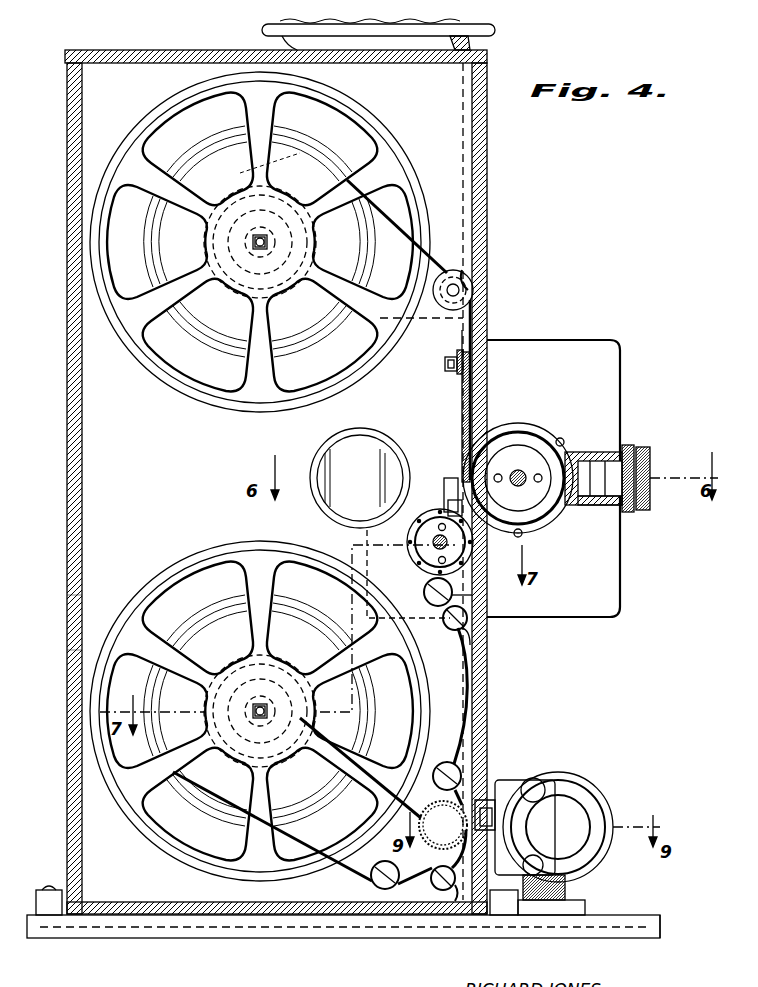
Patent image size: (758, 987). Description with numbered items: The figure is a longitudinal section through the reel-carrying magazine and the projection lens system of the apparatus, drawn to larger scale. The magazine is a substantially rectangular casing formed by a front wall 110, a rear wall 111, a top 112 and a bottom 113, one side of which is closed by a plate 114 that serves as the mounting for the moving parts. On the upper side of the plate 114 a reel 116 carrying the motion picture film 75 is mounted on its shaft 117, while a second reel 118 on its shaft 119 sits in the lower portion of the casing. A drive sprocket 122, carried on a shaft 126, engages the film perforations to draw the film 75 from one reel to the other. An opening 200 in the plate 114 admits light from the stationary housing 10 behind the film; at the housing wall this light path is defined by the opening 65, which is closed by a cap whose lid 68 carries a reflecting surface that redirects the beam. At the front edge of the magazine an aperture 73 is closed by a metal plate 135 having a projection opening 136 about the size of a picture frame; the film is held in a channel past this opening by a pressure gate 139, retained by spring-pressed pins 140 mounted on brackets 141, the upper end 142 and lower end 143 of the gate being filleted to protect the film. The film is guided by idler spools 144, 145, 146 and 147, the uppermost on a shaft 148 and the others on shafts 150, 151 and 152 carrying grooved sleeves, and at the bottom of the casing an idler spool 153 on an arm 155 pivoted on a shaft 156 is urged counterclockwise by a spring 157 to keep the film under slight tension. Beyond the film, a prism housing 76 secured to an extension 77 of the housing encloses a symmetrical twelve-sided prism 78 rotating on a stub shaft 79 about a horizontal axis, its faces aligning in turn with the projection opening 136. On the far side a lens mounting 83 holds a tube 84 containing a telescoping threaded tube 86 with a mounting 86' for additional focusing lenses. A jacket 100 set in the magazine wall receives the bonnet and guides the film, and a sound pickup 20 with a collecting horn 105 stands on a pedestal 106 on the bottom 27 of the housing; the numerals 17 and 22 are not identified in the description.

The stationary housing 10 is at (58, 596).
The lower reel support 17 is at (195, 800).
The sound pickup 20 is at (595, 775).
The cabinet wall 22 is at (58, 653).
The bottom of the stationary housing 27 is at (660, 922).
The opening 65 is at (590, 812).
The lid 68 is at (340, 500).
The aperture 73 is at (492, 428).
The motion picture film 75 is at (398, 222).
The prism housing 76 is at (542, 452).
The extension 77 is at (598, 338).
The symmetrical 12-sided prism 78 is at (545, 448).
The stub shaft 79 is at (526, 485).
The lens mounting 83 is at (598, 452).
The tube 84 is at (630, 445).
The telescoping threaded tube 86 is at (615, 517).
The mounting for additional lenses 86' is at (667, 473).
The jacket 100 is at (420, 812).
The collecting horn 105 is at (490, 808).
The pedestal 106 is at (568, 893).
The front wall 110 is at (490, 185).
The rear wall 111 is at (67, 347).
The top 112 is at (158, 50).
The bottom 113 is at (175, 938).
The plate 114 is at (105, 533).
The reel 116 is at (378, 135).
The shaft 117 is at (255, 242).
The second reel 118 is at (185, 560).
The shaft 119 is at (255, 709).
The drive sprocket 122 is at (408, 552).
The shaft 126 is at (430, 550).
The metal plate 135 is at (490, 350).
The projection opening 136 is at (520, 433).
The pressure gate 139 is at (462, 398).
The spring-pressed pins 140 is at (457, 358).
The brackets 141 is at (445, 365).
The upper end of the pressure gate 142 is at (462, 345).
The lower end of the pressure gate 143 is at (444, 495).
The idler spool 144 is at (475, 288).
The idler spool 145 is at (472, 595).
The idler spool 146 is at (470, 638).
The idler spool 147 is at (470, 770).
The shaft 148 is at (470, 268).
The shaft 150 is at (424, 592).
The shaft 151 is at (443, 624).
The shaft 152 is at (435, 770).
The idler spool 153 is at (372, 884).
The arm 155 is at (383, 892).
The shaft 156 is at (441, 892).
The spring 157 is at (456, 895).
The opening 200 is at (322, 445).